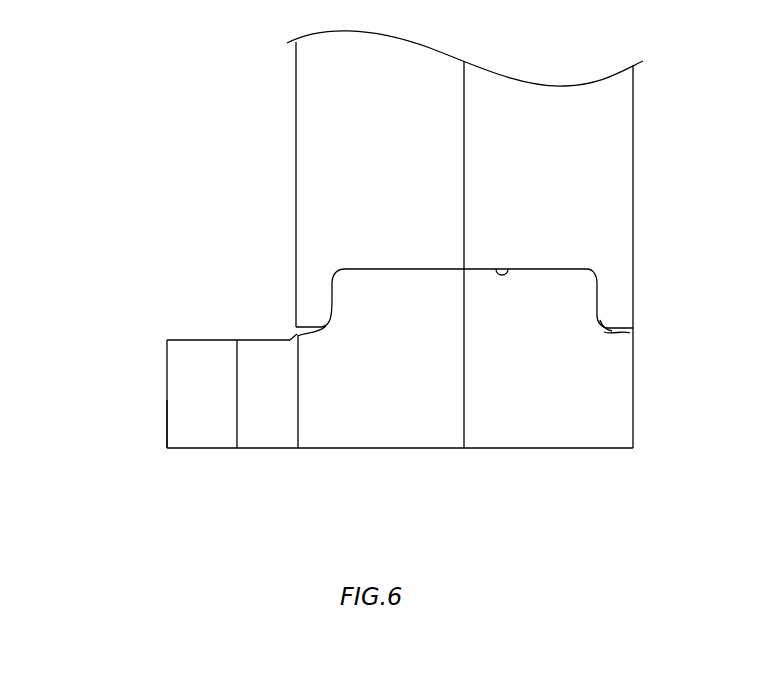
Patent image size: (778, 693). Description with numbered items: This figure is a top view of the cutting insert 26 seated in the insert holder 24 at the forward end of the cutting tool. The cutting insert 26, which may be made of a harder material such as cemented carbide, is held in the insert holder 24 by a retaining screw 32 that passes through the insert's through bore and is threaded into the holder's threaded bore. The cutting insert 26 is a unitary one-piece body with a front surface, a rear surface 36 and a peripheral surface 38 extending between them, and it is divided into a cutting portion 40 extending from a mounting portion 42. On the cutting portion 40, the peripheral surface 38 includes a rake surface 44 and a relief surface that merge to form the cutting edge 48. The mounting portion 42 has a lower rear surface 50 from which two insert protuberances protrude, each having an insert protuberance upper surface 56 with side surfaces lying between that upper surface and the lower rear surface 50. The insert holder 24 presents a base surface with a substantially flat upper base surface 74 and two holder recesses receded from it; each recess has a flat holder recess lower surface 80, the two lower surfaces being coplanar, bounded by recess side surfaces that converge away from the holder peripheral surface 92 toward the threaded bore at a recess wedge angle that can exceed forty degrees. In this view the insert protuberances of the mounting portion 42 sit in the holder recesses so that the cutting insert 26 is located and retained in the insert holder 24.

The insert holder 24 is at (197, 153).
The cutting insert 26 is at (107, 303).
The retaining screw 32 is at (593, 448).
The rear surface 36 is at (195, 338).
The peripheral surface 38 is at (542, 415).
The cutting portion 40 is at (153, 378).
The mounting portion 42 is at (553, 253).
The rake surface 44 is at (195, 430).
The cutting edge 48 is at (167, 432).
The lower rear surface 50 is at (302, 336).
The insert protuberance upper surface 56 is at (572, 267).
The upper base surface 74 is at (298, 332).
The holder recess lower surface 80 is at (513, 270).
The holder peripheral surface 92 is at (313, 290).